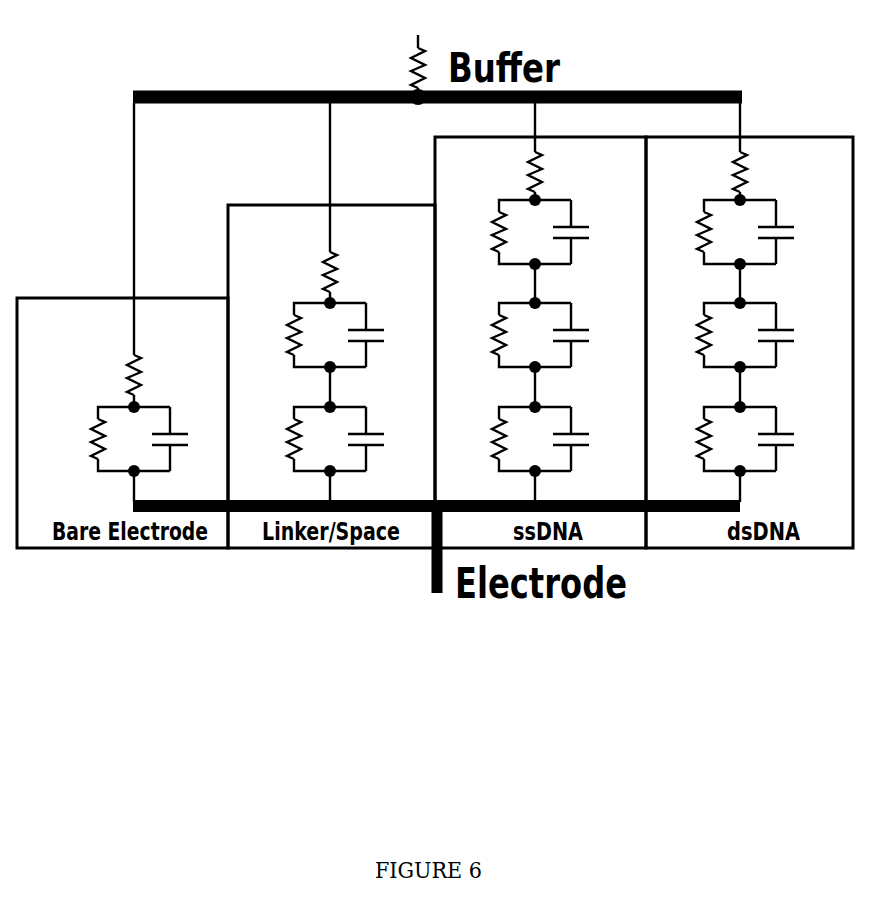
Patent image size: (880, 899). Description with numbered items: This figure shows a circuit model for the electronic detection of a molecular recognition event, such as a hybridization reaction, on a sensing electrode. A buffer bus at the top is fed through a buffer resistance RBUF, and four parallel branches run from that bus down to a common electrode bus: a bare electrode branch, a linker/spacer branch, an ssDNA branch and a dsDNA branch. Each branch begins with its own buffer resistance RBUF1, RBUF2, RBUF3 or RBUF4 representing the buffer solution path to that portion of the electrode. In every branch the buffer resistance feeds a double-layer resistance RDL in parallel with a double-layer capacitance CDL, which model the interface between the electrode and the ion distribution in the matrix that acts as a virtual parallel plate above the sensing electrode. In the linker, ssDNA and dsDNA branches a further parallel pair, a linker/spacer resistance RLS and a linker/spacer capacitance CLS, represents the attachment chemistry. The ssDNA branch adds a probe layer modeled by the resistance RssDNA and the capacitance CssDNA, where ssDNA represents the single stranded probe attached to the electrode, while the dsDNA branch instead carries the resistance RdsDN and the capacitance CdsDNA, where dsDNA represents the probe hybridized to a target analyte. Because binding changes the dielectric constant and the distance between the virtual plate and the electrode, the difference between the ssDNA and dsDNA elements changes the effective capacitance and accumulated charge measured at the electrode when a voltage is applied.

The buffer solution resistance RBUF is at (388, 76).
The buffer resistance, bare electrode branch RBUF1 is at (104, 375).
The buffer resistance, linker/spacer branch RBUF2 is at (301, 270).
The buffer resistance, ssDNA branch RBUF3 is at (499, 172).
The buffer resistance, dsDNA branch RBUF4 is at (712, 172).
The double-layer resistance RDL is at (416, 335).
The double-layer capacitance CDL is at (490, 340).
The linker/spacer resistance RLS is at (509, 439).
The linker/spacer capacitance CLS is at (590, 444).
The ssDNA layer resistance RssDNA is at (512, 344).
The ssDNA layer capacitance CssDNA is at (598, 343).
The dsDNA layer resistance RdsDN is at (717, 345).
The dsDNA layer capacitance CdsDNA is at (803, 348).